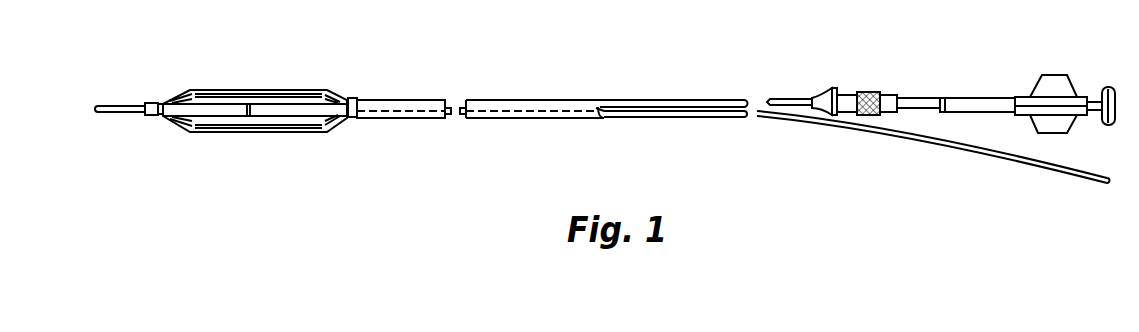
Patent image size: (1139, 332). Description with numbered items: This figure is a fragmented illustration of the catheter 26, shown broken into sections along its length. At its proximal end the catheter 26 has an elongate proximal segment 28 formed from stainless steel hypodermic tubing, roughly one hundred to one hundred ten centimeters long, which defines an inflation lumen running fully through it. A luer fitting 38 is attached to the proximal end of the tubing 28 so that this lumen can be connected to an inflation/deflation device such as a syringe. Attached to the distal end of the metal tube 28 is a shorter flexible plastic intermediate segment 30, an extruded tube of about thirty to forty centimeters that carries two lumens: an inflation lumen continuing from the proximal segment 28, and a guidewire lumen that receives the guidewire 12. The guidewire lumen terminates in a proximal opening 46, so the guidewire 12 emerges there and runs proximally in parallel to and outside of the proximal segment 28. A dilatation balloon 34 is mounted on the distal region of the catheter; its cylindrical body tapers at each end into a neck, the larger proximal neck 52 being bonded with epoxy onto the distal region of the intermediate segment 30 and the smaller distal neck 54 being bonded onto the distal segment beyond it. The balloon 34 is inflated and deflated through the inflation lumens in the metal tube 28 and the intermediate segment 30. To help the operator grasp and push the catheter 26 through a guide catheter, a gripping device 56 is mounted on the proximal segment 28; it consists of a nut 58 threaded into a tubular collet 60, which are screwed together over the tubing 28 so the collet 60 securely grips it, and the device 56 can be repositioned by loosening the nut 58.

The guidewire 12 is at (128, 105).
The catheter 26 is at (639, 91).
The proximal segment 28 is at (741, 103).
The intermediate segment 30 is at (395, 100).
The dilatation balloon 34 is at (236, 90).
The luer fitting 38 is at (1056, 82).
The proximal opening 46 is at (604, 113).
The proximal neck 52 is at (350, 98).
The distal neck 54 is at (158, 116).
The gripping device 56 is at (877, 82).
The nut 58 is at (827, 88).
The collet 60 is at (886, 92).